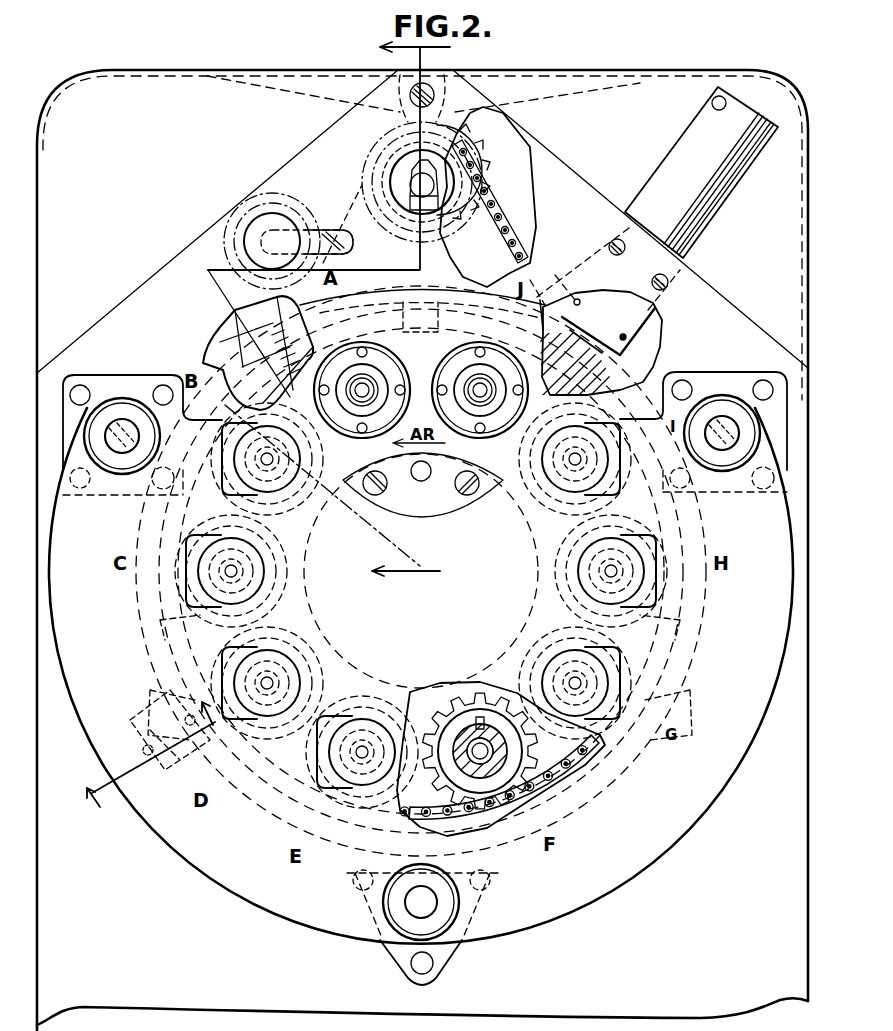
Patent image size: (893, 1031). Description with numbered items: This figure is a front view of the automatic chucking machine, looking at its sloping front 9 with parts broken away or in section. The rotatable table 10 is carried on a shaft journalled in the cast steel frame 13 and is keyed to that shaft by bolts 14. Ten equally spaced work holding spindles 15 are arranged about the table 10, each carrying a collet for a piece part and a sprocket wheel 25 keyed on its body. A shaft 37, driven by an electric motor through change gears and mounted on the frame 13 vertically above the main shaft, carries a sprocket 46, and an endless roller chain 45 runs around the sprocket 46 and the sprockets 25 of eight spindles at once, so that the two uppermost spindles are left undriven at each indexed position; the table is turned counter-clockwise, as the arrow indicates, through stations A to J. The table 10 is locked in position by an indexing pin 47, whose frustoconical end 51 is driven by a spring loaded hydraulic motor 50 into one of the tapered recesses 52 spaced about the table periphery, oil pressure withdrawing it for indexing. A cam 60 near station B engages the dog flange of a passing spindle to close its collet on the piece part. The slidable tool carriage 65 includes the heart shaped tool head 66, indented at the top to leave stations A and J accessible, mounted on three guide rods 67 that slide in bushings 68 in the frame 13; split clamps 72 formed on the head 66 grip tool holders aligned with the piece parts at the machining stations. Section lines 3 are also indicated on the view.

The section line 3- 3 is at (330, 310).
The sloping front 9 is at (160, 769).
The rotatable table 10 is at (468, 324).
The cast steel frame 13 is at (162, 72).
The bolts 14 is at (457, 487).
The work holding spindles 15 is at (457, 353).
The sprocket wheel 25 is at (510, 853).
The shaft 37 is at (440, 200).
The endless roller chain 45 is at (600, 783).
The sprocket 46 is at (463, 177).
The indexing pin 47 is at (608, 342).
The spring loaded hydraulic motor 50 is at (709, 256).
The frustoconical end 51 is at (537, 338).
The tapered recess 52 is at (257, 828).
The cam 60 is at (232, 330).
The slidable tool carriage 65 is at (208, 880).
The tool head 66 is at (666, 835).
The guide rods 67 is at (125, 448).
The bushings 68 is at (130, 376).
The split clamps 72 is at (277, 652).